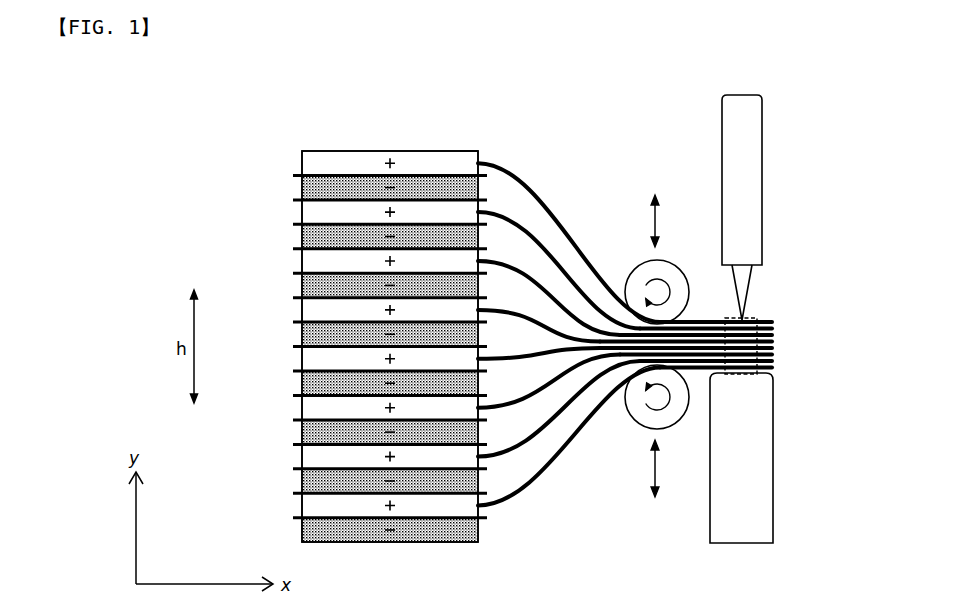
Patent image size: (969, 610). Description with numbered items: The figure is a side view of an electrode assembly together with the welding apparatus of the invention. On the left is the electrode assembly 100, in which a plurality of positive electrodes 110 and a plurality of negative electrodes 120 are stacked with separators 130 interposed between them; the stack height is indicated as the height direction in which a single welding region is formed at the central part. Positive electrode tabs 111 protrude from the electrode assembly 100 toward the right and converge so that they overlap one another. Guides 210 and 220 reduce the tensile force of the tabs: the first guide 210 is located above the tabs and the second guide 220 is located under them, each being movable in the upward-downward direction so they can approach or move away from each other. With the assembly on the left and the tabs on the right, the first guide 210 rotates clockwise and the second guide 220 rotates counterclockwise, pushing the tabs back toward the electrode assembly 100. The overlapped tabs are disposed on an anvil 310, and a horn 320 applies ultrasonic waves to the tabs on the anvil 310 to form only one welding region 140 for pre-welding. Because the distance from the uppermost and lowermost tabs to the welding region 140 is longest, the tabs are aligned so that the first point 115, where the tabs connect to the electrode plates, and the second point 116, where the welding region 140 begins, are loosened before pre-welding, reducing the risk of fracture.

The electrode assembly 100 is at (275, 151).
The positive electrode 110 is at (422, 162).
The positive electrode tab 111 is at (520, 178).
The first point 115 is at (484, 153).
The second point 116 is at (716, 311).
The negative electrode 120 is at (328, 186).
The separator 130 is at (293, 174).
The welding region 140 is at (757, 325).
The first guide 210 is at (630, 273).
The second guide 220 is at (640, 420).
The anvil 310 is at (770, 456).
The horn 320 is at (764, 200).